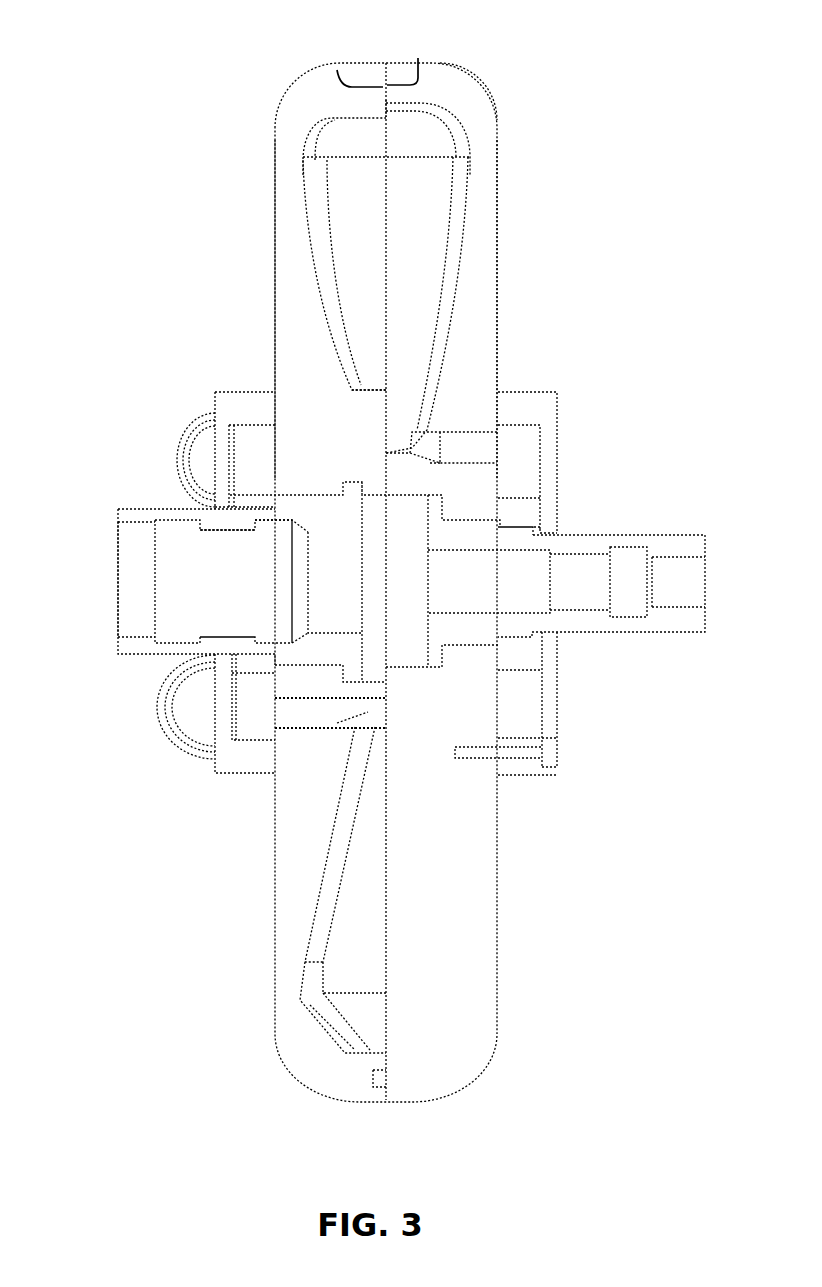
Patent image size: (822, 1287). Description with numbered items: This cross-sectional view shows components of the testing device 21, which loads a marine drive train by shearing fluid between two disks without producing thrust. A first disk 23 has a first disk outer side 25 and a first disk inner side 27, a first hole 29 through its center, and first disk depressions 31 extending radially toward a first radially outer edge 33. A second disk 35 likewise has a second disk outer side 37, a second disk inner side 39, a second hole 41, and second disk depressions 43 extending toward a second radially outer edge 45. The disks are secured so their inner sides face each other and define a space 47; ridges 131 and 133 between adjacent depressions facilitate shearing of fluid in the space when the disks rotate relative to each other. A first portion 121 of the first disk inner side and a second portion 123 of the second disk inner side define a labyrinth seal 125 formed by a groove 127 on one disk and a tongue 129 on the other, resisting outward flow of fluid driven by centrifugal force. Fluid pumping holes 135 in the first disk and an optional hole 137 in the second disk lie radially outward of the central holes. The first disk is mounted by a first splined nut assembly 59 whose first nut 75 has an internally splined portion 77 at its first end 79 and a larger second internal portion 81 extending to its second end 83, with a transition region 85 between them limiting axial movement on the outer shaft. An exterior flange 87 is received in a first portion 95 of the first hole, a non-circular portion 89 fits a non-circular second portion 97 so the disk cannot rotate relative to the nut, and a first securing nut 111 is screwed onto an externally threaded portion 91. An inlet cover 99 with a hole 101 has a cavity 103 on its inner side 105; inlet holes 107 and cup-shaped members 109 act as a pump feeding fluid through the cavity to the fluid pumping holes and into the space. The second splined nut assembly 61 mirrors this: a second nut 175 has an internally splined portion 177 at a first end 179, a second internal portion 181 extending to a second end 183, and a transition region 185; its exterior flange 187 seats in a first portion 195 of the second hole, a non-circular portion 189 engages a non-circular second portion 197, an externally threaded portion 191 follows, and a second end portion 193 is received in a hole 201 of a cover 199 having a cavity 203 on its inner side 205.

The testing device 21 is at (672, 282).
The first disk 23 is at (272, 92).
The first disk outer side 25 is at (275, 157).
The first disk inner side 27 is at (393, 226).
The first hole 29 is at (342, 503).
The first disk depressions 31 is at (347, 275).
The first radially outer edge 33 is at (384, 73).
The second disk 35 is at (513, 108).
The second disk outer side 37 is at (498, 167).
The second disk inner side 39 is at (392, 313).
The second hole 41 is at (451, 636).
The second disk depressions 43 is at (410, 275).
The second radially outer edge 45 is at (458, 75).
The space 47 is at (368, 370).
The first splined nut assembly 59 is at (115, 668).
The second splined nut assembly 61 is at (700, 670).
The first nut 75 is at (136, 507).
The internally splined portion 77 is at (335, 633).
The first end 79 is at (363, 570).
The second internal portion 81 is at (238, 638).
The second end 83 is at (120, 525).
The transition region 85 is at (303, 637).
The exterior flange 87 is at (357, 493).
The non-circular portion 89 is at (299, 495).
The externally threaded portion 91 is at (255, 505).
The first portion 95 is at (358, 682).
The second portion 97 is at (318, 496).
The inlet cover 99 is at (208, 777).
The hole 101 is at (213, 510).
The cavity 103 is at (261, 445).
The inner side 105 is at (237, 462).
The inlet holes 107 is at (218, 450).
The cup-shaped members 109 is at (193, 453).
The first securing nut 111 is at (257, 670).
The first portion of the first disk inner side 121 is at (387, 103).
The second portion of the second disk inner side 123 is at (384, 77).
The seal 125 is at (388, 112).
The groove 127 is at (408, 60).
The tongue 129 is at (345, 66).
The ridges 131 is at (383, 430).
The ridges 133 is at (386, 879).
The fluid pumping holes 135 is at (288, 723).
The hole 137 is at (441, 447).
The second nut 175 is at (700, 522).
The internally splined portion 177 is at (691, 605).
The first end 179 is at (704, 555).
The second internal portion 181 is at (574, 558).
The second end 183 is at (427, 558).
The transition region 185 is at (646, 554).
The exterior flange 187 is at (433, 508).
The non-circular portion 189 is at (482, 519).
The externally threaded portion 191 is at (515, 526).
The second end portion 193 is at (633, 532).
The first portion 195 is at (437, 672).
The second portion 197 is at (483, 643).
The cover 199 is at (562, 780).
The hole 201 is at (557, 533).
The cavity 203 is at (518, 470).
The inner side 205 is at (540, 447).